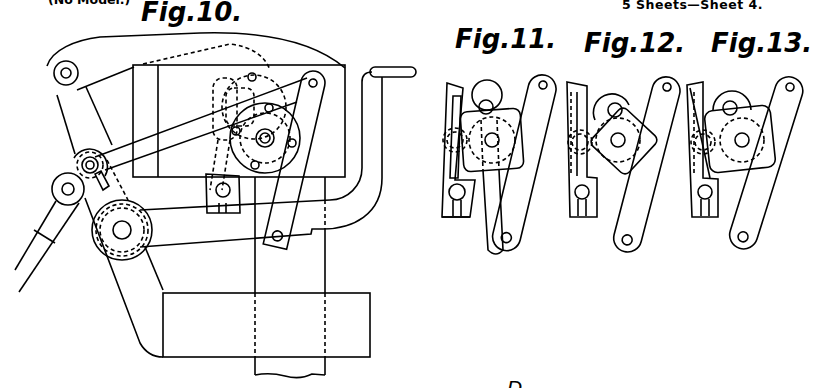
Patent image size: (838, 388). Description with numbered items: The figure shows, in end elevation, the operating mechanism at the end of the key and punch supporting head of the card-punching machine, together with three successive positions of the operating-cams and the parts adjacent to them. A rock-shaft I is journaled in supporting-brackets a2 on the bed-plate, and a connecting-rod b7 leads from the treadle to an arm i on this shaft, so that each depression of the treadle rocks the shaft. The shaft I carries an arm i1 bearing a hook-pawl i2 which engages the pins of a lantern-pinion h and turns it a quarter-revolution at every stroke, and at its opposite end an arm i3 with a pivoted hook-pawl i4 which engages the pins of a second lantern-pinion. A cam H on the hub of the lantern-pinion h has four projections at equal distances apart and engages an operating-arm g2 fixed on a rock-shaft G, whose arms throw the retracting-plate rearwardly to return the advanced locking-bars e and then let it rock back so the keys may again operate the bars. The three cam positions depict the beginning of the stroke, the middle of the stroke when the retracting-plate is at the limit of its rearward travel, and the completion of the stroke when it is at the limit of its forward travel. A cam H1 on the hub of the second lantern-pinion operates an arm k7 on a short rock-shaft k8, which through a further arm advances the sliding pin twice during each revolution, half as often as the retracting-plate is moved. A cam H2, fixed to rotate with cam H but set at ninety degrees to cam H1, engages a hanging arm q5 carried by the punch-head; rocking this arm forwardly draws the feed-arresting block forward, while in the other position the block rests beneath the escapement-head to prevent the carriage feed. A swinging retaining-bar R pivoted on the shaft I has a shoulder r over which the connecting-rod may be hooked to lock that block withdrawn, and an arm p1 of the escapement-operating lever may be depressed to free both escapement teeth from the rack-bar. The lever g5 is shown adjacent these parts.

In FIG. 10, the hook-pawl i4 is at (162, 67).
In FIG. 10, the arm i3 is at (92, 143).
In FIG. 10, the hook-pawl i2 is at (182, 126).
In FIG. 10, the arm i1 is at (128, 176).
In FIG. 10, the arm i is at (88, 233).
In FIG. 10, the connecting-rod b7 is at (30, 258).
In FIG. 10, the rock-shaft I is at (120, 233).
In FIG. 10, the supporting-brackets a2 is at (124, 277).
In FIG. 10, the swinging retaining-bar R is at (202, 228).
In FIG. 10, the rock-shaft G is at (223, 213).
In FIG. 11, the rock-shaft G is at (455, 199).
In FIG. 12, the rock-shaft G is at (580, 198).
In FIG. 13, the rock-shaft G is at (703, 196).
In FIG. 10, the lantern-pinion h is at (297, 162).
In FIG. 10, the hanging arm q5 is at (306, 115).
In FIG. 10, the arm of the escapement-operating lever p1 is at (392, 66).
In FIG. 10, the shoulder r is at (314, 232).
In FIG. 10, the locking-bars e is at (264, 376).
In FIG. 11, the arm k7 is at (459, 88).
In FIG. 11, the short rock-shaft k8 is at (450, 138).
In FIG. 11, the operating-arm g2 is at (447, 155).
In FIG. 12, the operating-arm g2 is at (577, 165).
In FIG. 13, the operating-arm g2 is at (697, 167).
In FIG. 11, the lever arm g5 is at (521, 188).
In FIG. 12, the lever arm g5 is at (655, 200).
In FIG. 13, the lever arm g5 is at (760, 205).
In FIG. 11, the cam H1 is at (483, 91).
In FIG. 12, the cam H1 is at (601, 102).
In FIG. 13, the cam H1 is at (727, 102).
In FIG. 11, the cam H2 is at (466, 218).
In FIG. 11, the cam H is at (465, 225).